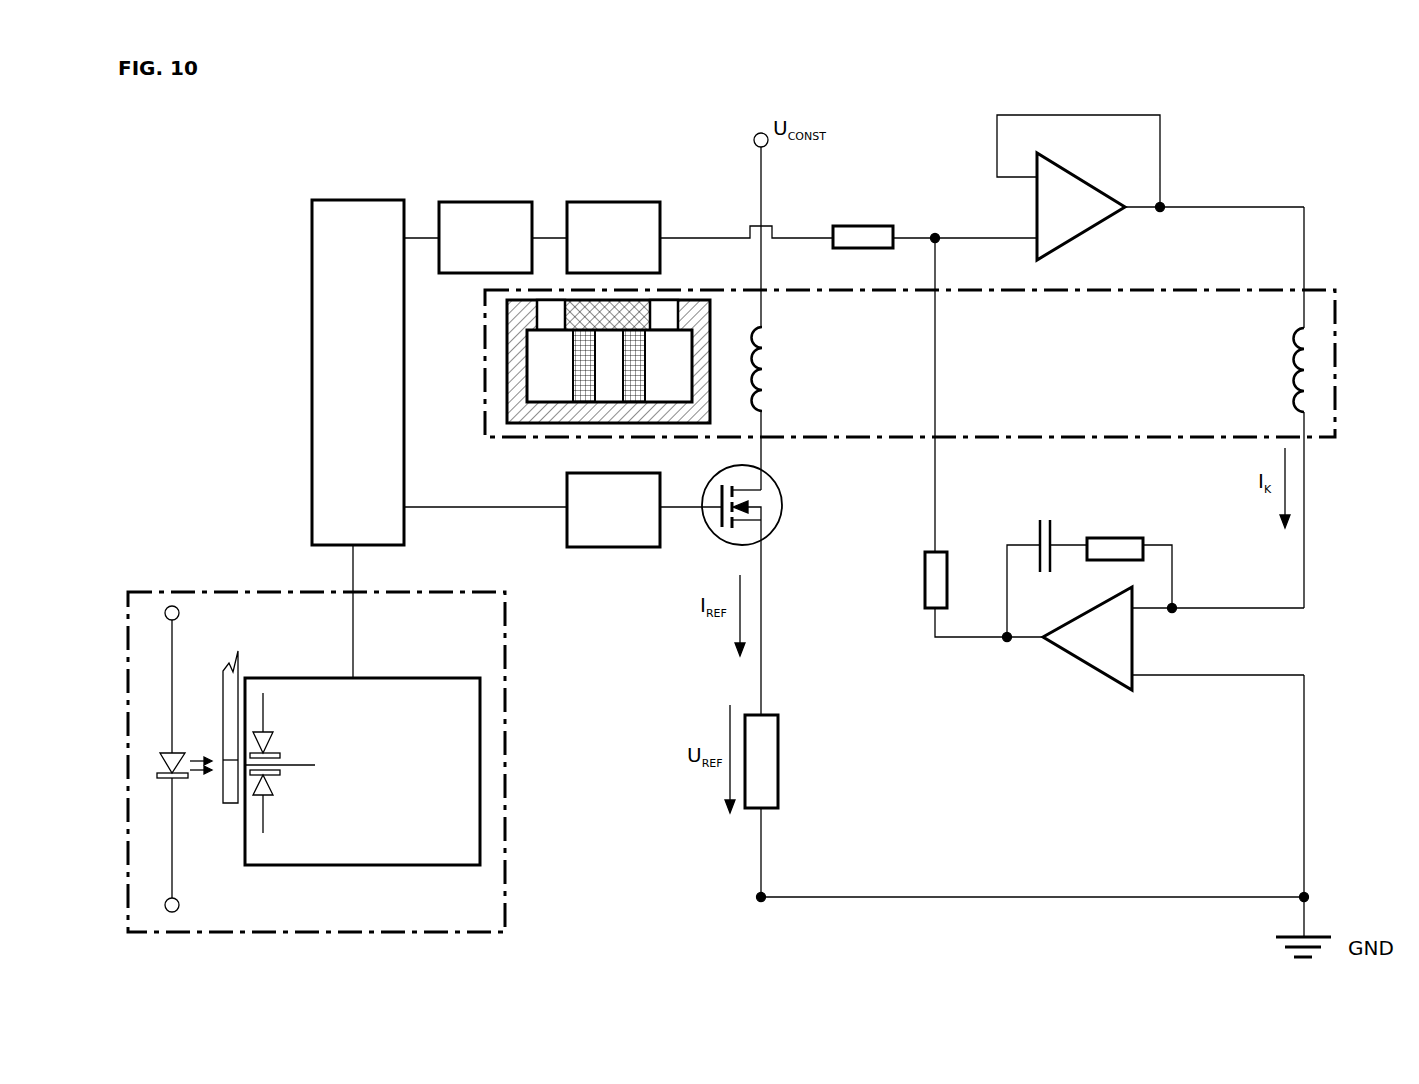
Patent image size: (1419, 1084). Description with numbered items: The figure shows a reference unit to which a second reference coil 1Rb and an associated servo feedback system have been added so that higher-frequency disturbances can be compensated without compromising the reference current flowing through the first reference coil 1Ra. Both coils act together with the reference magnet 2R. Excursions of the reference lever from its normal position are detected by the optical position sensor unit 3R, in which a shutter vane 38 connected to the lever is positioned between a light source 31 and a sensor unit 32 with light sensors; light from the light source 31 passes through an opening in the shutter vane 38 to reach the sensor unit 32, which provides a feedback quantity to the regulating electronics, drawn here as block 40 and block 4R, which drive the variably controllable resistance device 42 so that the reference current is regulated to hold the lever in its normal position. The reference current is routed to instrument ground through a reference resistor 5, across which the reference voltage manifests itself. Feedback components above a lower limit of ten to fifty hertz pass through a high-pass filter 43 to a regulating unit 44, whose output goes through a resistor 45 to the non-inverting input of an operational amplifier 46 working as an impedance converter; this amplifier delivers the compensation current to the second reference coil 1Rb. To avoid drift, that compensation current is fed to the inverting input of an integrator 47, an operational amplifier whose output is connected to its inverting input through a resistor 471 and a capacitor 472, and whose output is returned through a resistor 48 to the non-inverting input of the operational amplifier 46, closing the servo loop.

The control unit 40 is at (358, 372).
The high-pass filter 43 is at (485, 237).
The regulating unit 44 is at (613, 237).
The resistor 45 is at (863, 223).
The operational amplifier 46 is at (1078, 190).
The first reference coil 1Ra is at (670, 320).
The second reference coil 1Rb is at (1271, 468).
The reference magnet 2R is at (498, 391).
The driver stage 4R is at (563, 510).
The variably controllable resistance device 42 is at (758, 505).
The resistor 48 is at (965, 597).
The resistor 471 is at (1047, 559).
The capacitor 472 is at (1129, 544).
The integrator 47 is at (1093, 655).
The reference resistor 5 is at (775, 761).
The optical position sensor unit 3R is at (316, 762).
The light source 31 is at (175, 759).
The shutter vane 38 is at (215, 727).
The sensor unit 32 is at (362, 705).